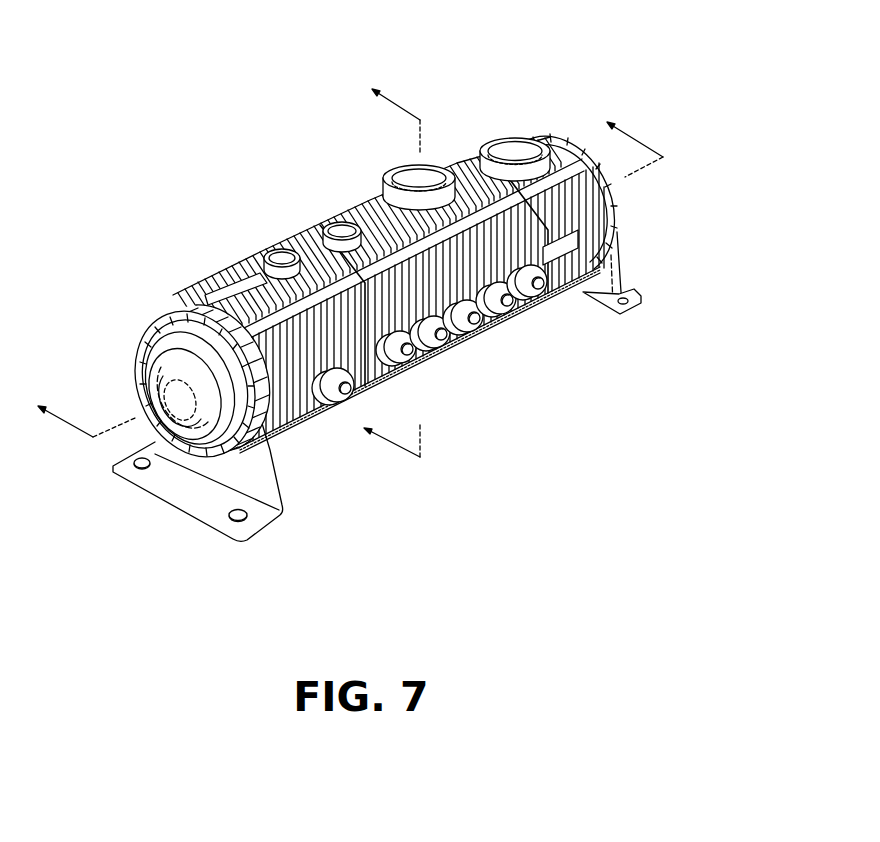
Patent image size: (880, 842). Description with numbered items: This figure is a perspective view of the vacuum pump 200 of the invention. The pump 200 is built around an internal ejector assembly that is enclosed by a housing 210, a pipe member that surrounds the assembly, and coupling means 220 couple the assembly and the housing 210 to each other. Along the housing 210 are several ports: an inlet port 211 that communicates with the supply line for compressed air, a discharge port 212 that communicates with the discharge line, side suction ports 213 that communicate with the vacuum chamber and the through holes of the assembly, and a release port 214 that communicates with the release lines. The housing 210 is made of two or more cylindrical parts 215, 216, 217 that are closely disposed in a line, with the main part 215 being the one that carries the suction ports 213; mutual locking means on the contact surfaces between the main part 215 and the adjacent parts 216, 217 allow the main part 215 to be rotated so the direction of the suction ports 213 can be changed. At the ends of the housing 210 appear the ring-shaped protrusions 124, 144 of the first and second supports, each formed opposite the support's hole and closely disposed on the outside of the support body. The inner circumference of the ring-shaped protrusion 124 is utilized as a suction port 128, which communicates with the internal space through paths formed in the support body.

The pump 200 is at (244, 96).
The housing 210 is at (549, 320).
The inlet port 211 is at (280, 254).
The discharge port 212 is at (522, 142).
The side suction ports 213 is at (342, 228).
The release port 214 is at (342, 388).
The main part 215 is at (367, 203).
The cylindrical part 216 is at (232, 275).
The cylindrical part 217 is at (470, 152).
The ring-shaped protrusion 124 is at (135, 368).
The suction port 128 is at (175, 420).
The ring-shaped protrusion 144 is at (622, 203).
The coupling means 220 is at (294, 490).